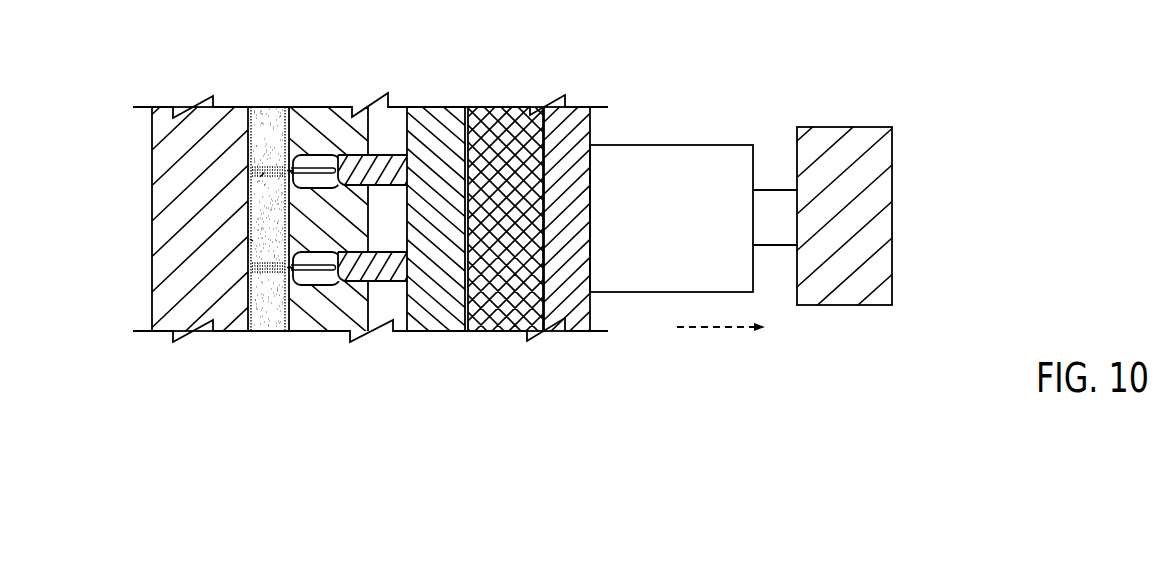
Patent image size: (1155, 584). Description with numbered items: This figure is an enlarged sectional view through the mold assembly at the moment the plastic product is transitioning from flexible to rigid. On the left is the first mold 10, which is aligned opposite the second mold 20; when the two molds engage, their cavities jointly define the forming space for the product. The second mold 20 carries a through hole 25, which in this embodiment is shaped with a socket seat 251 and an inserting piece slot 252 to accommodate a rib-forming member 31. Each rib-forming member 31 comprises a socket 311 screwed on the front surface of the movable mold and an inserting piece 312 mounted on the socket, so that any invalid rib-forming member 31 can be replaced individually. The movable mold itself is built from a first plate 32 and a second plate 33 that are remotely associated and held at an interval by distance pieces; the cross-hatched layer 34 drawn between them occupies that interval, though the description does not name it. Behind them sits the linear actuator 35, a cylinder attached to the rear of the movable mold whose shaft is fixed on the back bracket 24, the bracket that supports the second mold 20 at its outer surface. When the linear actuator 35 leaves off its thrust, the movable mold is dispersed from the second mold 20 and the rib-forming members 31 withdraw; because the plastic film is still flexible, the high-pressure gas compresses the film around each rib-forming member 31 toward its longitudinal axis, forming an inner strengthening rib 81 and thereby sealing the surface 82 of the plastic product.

The first mold 10 is at (165, 123).
The second mold 20 is at (360, 115).
The back bracket 24 is at (853, 108).
The through hole 25 is at (335, 40).
The socket seat 251 is at (320, 159).
The inserting piece slot 252 is at (282, 136).
The rib-forming member 31 is at (347, 282).
The socket 311 is at (380, 270).
The inserting piece 312 is at (310, 270).
The first plate 32 is at (433, 126).
The second plate 33 is at (568, 128).
The mesh layer 34 is at (505, 119).
The linear actuator 35 is at (688, 153).
The inner strengthening rib 81 is at (261, 181).
The surface 82 is at (277, 240).